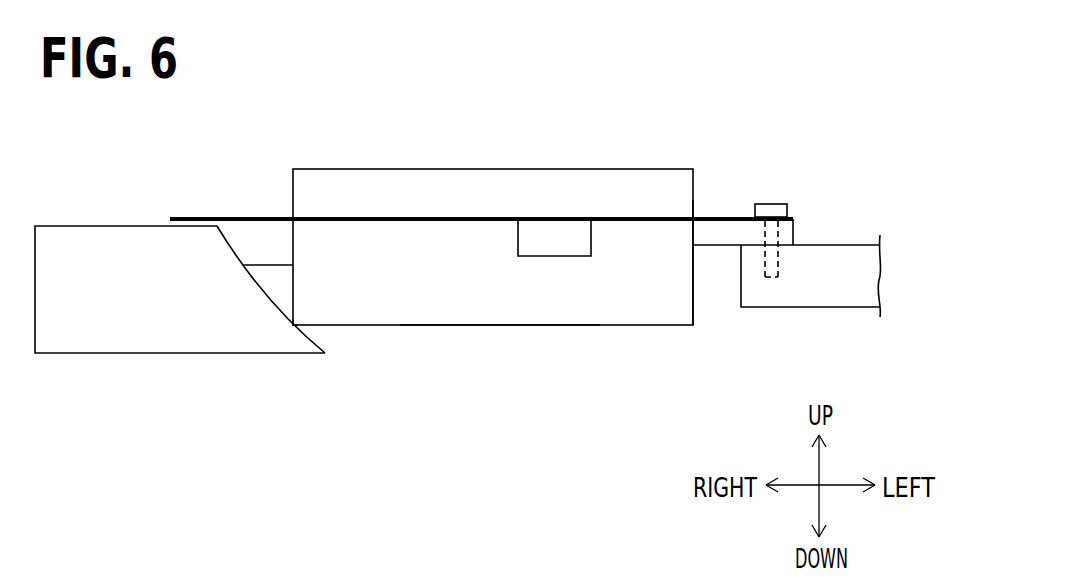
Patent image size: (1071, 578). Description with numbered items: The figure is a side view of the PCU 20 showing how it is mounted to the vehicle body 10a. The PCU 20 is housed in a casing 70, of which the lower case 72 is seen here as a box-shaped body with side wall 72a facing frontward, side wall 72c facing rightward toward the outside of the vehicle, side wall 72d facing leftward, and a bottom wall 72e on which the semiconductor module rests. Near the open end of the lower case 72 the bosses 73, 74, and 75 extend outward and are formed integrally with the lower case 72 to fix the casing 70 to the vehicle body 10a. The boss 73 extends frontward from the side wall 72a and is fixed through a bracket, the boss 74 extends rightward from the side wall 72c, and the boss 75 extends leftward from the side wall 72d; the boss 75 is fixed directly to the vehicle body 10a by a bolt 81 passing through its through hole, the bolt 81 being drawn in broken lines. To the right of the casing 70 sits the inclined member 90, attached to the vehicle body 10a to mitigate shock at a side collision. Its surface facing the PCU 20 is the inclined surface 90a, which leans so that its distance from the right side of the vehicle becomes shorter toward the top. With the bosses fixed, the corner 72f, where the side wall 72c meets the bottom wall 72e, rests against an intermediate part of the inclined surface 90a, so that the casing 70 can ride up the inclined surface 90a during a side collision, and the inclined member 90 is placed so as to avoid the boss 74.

The PCU 20 is at (715, 162).
The casing 70 is at (530, 281).
The lower case 72 is at (695, 327).
The side wall 72a is at (562, 298).
The side wall 72c is at (287, 275).
The side wall 72d is at (693, 269).
The bottom wall 72e is at (492, 328).
The corner 72f is at (290, 328).
The boss 73 is at (555, 232).
The boss 74 is at (200, 217).
The boss 75 is at (793, 232).
The bolt 81 is at (773, 208).
The inclined member 90 is at (113, 339).
The inclined surface 90a is at (237, 252).
The vehicle body 10a is at (845, 278).